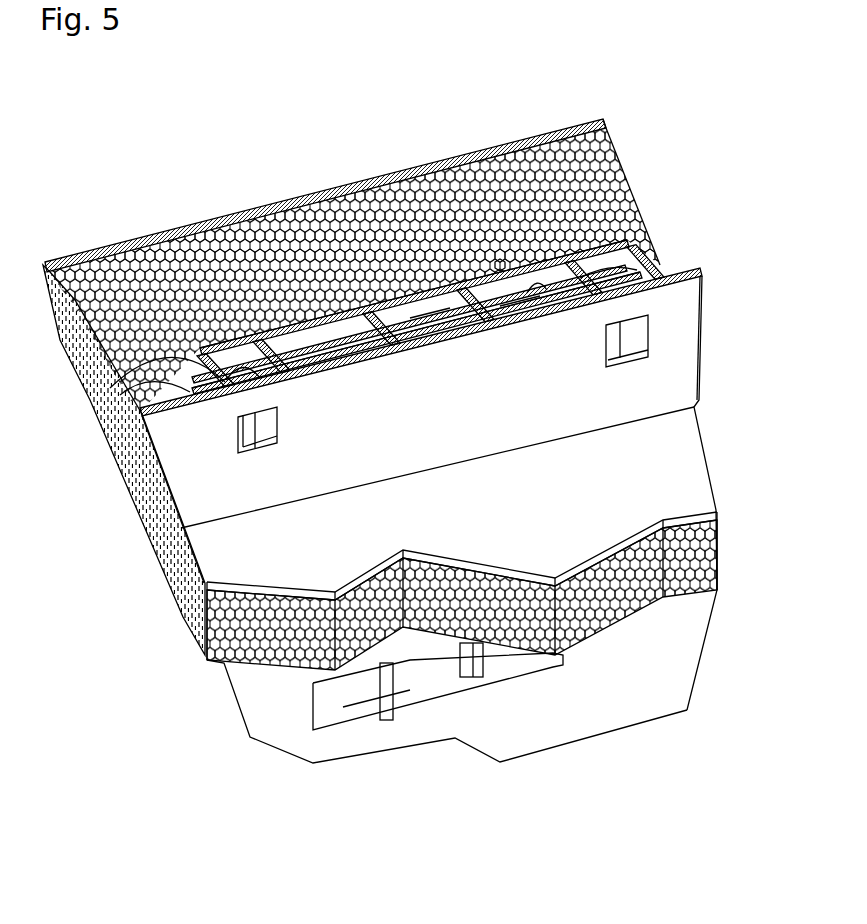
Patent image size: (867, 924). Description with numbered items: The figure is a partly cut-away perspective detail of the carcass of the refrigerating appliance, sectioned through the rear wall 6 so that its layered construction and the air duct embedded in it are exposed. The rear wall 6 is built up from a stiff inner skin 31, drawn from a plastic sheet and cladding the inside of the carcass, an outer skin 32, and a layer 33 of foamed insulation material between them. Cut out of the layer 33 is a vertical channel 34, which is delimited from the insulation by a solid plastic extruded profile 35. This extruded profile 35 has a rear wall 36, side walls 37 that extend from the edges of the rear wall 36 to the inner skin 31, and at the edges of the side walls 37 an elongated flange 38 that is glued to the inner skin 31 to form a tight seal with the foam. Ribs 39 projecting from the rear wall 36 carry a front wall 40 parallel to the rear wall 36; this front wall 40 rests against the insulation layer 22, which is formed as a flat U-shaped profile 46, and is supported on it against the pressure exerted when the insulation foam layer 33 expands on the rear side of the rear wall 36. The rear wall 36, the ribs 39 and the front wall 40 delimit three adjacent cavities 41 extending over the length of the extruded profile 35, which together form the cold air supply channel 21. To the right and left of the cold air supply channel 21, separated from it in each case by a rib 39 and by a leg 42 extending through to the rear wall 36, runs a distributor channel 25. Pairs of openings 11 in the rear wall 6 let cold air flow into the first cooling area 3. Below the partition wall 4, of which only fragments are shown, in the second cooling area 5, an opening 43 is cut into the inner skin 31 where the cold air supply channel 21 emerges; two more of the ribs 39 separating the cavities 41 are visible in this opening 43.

The first cooling area 3 is at (706, 428).
The insulating partition wall 4 is at (208, 622).
The second cooling area 5 is at (583, 734).
The rear wall 6 is at (618, 114).
The pairs of openings 11 is at (628, 343).
The cold air supply channel 21 is at (398, 316).
The insulation layer 22 is at (484, 327).
The distributor channel 25 is at (232, 356).
The inner skin 31 is at (168, 473).
The outer skin 32 is at (230, 216).
The layer of foamed insulation material 33 is at (587, 198).
The vertical channel 34 is at (430, 300).
The extruded profile 35 is at (340, 307).
The rear wall of the extruded profile 36 is at (500, 267).
The side walls 37 is at (647, 247).
The elongated flange 38 is at (668, 270).
The ribs 39 is at (558, 232).
The front wall 40 is at (513, 307).
The cavities 41 is at (320, 697).
The leg 42 is at (668, 286).
The opening 43 is at (400, 697).
The flat U-shaped profile 46 is at (416, 330).